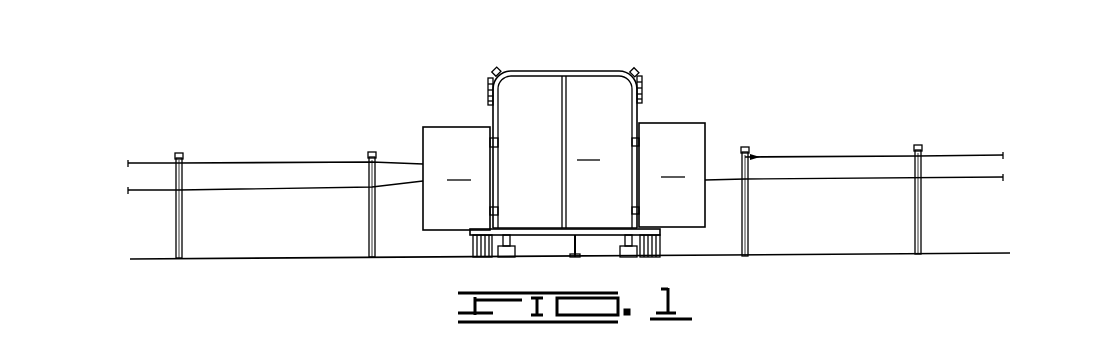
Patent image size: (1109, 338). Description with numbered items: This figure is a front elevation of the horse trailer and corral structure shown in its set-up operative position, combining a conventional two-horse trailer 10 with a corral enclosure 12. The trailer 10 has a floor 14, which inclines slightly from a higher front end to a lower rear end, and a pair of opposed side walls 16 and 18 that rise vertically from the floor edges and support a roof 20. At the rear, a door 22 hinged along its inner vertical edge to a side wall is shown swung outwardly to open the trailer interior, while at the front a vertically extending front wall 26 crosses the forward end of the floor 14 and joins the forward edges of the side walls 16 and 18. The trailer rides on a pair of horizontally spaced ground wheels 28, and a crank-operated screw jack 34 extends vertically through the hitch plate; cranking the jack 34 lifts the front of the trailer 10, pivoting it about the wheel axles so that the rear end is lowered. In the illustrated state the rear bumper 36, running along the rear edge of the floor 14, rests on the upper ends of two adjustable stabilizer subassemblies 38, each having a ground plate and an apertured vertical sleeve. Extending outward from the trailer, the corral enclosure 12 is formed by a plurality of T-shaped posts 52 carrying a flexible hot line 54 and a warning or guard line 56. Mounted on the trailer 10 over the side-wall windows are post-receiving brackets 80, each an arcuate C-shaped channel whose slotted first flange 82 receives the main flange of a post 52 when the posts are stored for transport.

The two-horse trailer 10 is at (510, 66).
The corral enclosure 12 is at (565, 177).
The floor 14 is at (526, 227).
The side wall 16 is at (503, 109).
The side wall 18 is at (629, 108).
The roof 20 is at (591, 70).
The door 22 is at (564, 176).
The front wall 26 is at (581, 152).
The ground wheels 28 is at (472, 243).
The crank-operated screw jack 34 is at (566, 245).
The rear bumper 36 is at (587, 227).
The adjustable stabilizer subassembly 38 is at (512, 252).
The post 52 is at (186, 222).
The flexible hot line 54 is at (270, 190).
The warning or guard line 56 is at (306, 162).
The post-receiving bracket 80 is at (486, 90).
The first flange 82 is at (493, 73).